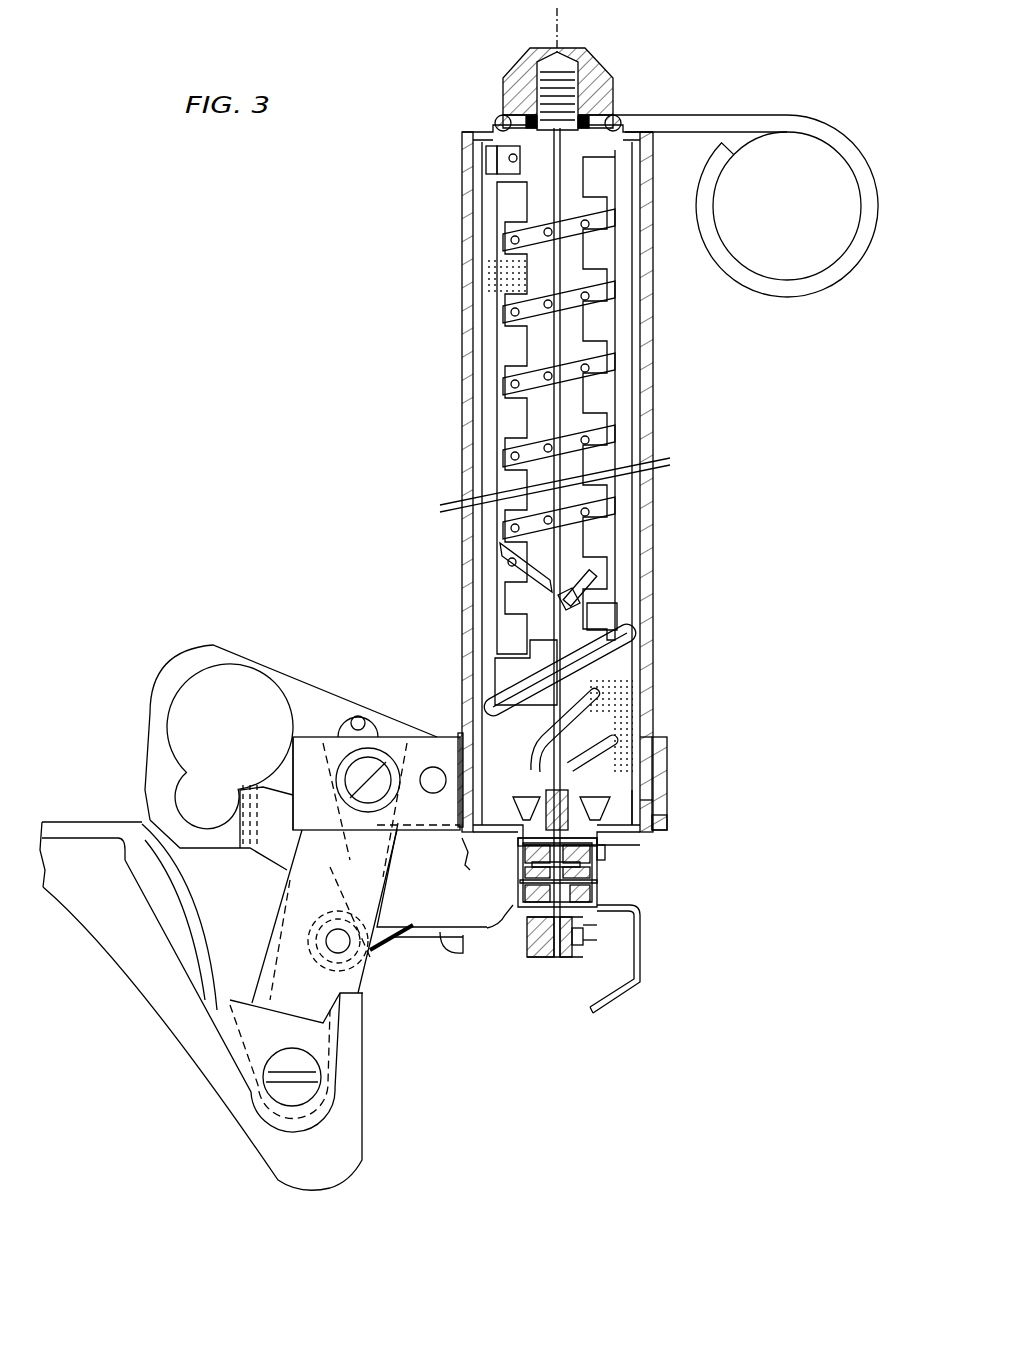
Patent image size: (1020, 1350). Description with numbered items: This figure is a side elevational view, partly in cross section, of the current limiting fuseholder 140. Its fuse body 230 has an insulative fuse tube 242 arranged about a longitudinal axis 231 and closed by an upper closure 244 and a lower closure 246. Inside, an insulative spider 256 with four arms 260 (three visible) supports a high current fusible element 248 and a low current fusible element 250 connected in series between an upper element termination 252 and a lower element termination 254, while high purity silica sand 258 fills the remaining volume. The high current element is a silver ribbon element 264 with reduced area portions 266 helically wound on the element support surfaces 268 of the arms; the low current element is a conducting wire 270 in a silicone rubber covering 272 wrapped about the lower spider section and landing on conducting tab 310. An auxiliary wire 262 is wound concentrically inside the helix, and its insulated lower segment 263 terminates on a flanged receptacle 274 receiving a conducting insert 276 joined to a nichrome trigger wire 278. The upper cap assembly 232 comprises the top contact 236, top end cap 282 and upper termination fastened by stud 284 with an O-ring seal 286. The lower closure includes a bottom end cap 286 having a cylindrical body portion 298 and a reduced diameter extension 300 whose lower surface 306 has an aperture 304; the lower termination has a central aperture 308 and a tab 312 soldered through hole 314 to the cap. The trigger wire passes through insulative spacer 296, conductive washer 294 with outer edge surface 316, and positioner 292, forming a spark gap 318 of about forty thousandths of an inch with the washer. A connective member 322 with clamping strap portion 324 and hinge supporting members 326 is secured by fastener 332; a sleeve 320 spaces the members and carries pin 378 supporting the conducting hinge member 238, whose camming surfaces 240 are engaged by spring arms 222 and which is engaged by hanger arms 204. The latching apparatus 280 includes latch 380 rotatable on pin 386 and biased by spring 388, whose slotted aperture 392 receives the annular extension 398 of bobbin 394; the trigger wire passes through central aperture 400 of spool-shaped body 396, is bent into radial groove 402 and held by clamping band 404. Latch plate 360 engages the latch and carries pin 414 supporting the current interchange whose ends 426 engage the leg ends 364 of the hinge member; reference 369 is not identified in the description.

The fuseholder 140 is at (331, 542).
The hanger arms 204 is at (335, 1172).
The spring arms 222 is at (208, 1048).
The fuse body 230 is at (451, 296).
The longitudinal axis 231 is at (557, 22).
The upper cap assembly 232 is at (458, 136).
The top contact 236 is at (592, 64).
The hinge member 238 is at (345, 1008).
The camming surfaces 240 is at (524, 857).
The fuse tube 242 is at (478, 320).
The upper closure 244 is at (490, 122).
The lower closure 246 is at (452, 852).
The high current fusible element 248 is at (640, 240).
The low current fusible element 250 is at (618, 740).
The upper element termination 252 is at (657, 152).
The lower element termination 254 is at (640, 805).
The spider 256 is at (505, 190).
The silica sand 258 is at (612, 685).
The arms 260 is at (500, 662).
The auxiliary wire 262 is at (632, 362).
The lower segment 263 is at (618, 705).
The ribbon element 264 is at (505, 553).
The reduced area portions 266 is at (618, 300).
The element support surfaces 268 is at (612, 440).
The conducting wires 270 is at (495, 655).
The silicone rubber covering 272 is at (605, 650).
The flanged receptacle 274 is at (652, 750).
The conducting insert 276 is at (600, 862).
The trigger wire 278 is at (590, 972).
The latching apparatus 280 is at (468, 1020).
The top end cap 282 is at (486, 176).
The stud 284 is at (550, 78).
The bottom end cap 286 is at (668, 745).
The positioner 292 is at (523, 873).
The conductive washer 294 is at (600, 880).
The insulative spacer 296 is at (600, 896).
The cylindrical body portion 298 is at (665, 805).
The reduced diameter extension 300 is at (462, 893).
The aperture 304 is at (520, 892).
The lower surface 306 is at (528, 918).
The central aperture 308 is at (540, 818).
The conducting tab 310 is at (440, 720).
The tab 312 is at (660, 820).
The hole 314 is at (620, 845).
The outer edge surface 316 is at (600, 890).
The spark gap 318 is at (582, 876).
The sleeve 320 is at (405, 813).
The connective member 322 is at (300, 684).
The clamping strap portion 324 is at (668, 765).
The hinge supporting members 326 is at (420, 745).
The fastener 332 is at (432, 767).
The latch plate 360 is at (258, 650).
The leg ends 364 is at (310, 842).
The mounting face 369 is at (300, 735).
The pin 378 is at (345, 768).
The latch 380 is at (470, 992).
The pin 386 is at (335, 948).
The spring 388 is at (380, 968).
The slotted aperture 392 is at (530, 925).
The bobbin 394 is at (590, 957).
The spool-shaped body 396 is at (585, 945).
The annular extension 398 is at (590, 928).
The central aperture 400 is at (562, 963).
The radial groove 402 is at (550, 960).
The clamping band 404 is at (528, 940).
The pin 414 is at (357, 716).
The ends 426 is at (345, 798).